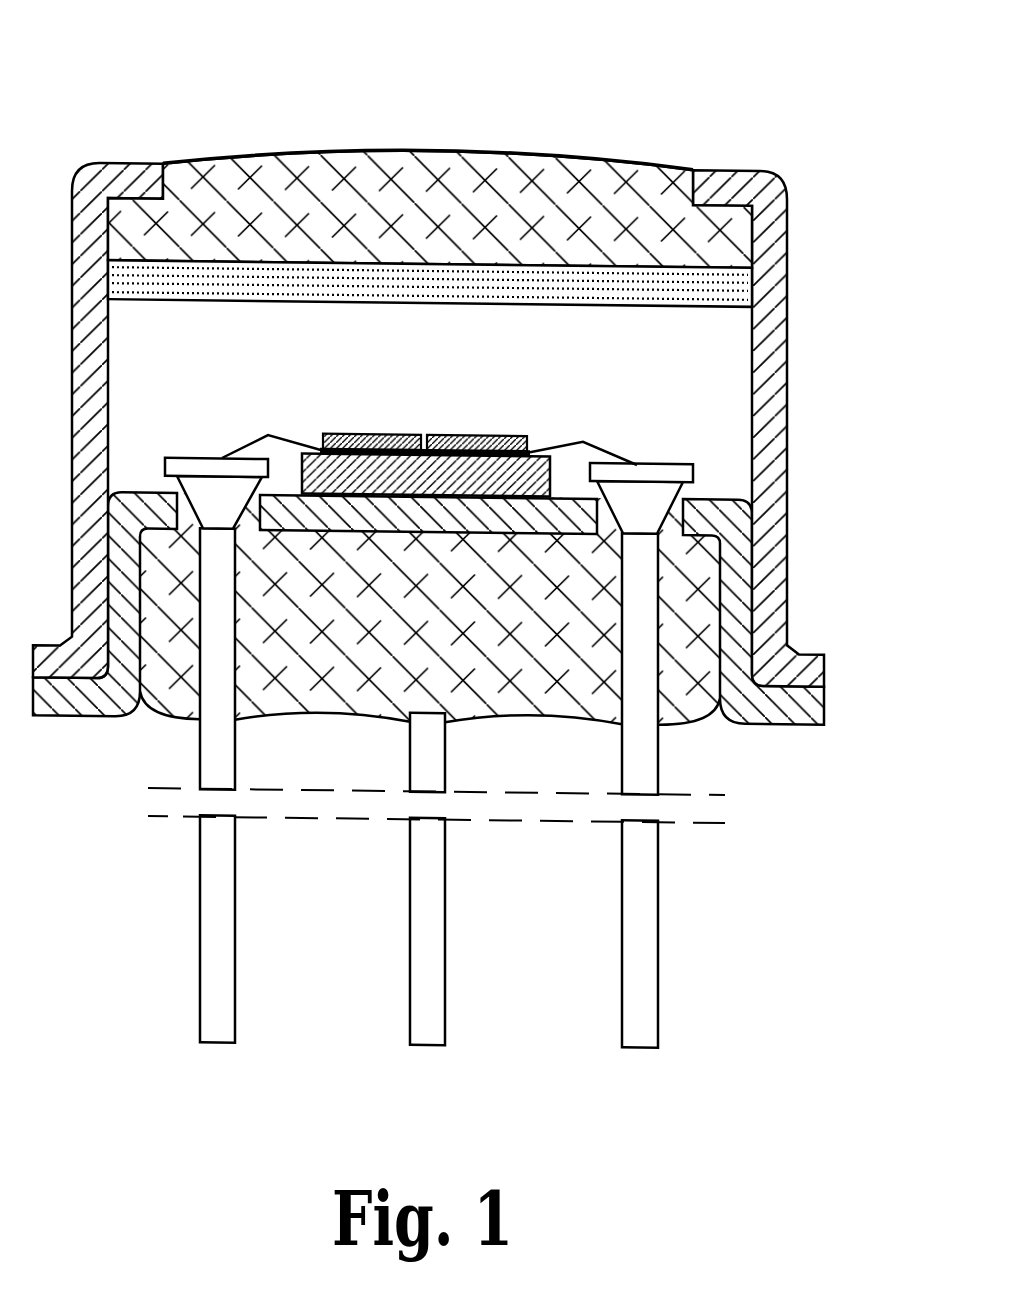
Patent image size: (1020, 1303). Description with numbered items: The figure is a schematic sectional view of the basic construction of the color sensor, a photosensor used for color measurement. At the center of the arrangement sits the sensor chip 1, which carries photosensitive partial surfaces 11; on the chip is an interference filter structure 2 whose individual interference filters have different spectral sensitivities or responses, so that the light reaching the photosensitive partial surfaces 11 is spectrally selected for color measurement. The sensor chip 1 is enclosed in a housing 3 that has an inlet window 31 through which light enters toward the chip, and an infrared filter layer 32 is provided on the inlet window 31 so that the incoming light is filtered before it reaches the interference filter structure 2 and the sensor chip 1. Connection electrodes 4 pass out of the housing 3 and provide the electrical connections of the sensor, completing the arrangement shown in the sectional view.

The sensor chip 1 is at (556, 464).
The interference filter structure 2 is at (488, 437).
The housing 3 is at (83, 697).
The connection electrodes 4 is at (217, 743).
The photosensitive partial surfaces 11 is at (322, 446).
The inlet window 31 is at (347, 197).
The infrared filter layer 32 is at (590, 288).